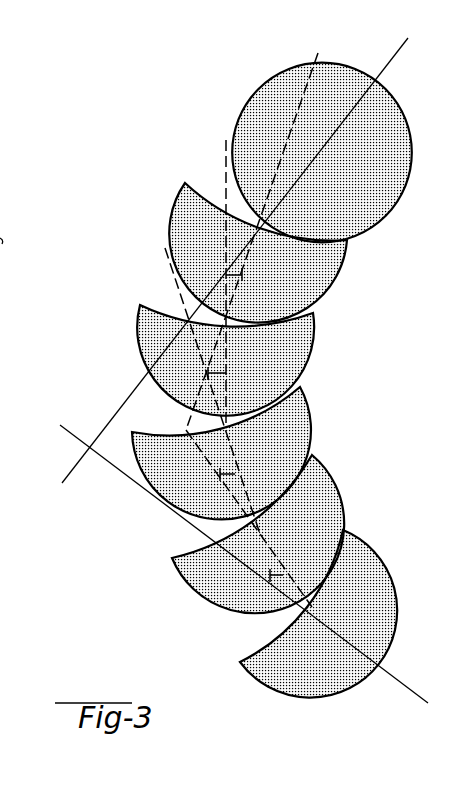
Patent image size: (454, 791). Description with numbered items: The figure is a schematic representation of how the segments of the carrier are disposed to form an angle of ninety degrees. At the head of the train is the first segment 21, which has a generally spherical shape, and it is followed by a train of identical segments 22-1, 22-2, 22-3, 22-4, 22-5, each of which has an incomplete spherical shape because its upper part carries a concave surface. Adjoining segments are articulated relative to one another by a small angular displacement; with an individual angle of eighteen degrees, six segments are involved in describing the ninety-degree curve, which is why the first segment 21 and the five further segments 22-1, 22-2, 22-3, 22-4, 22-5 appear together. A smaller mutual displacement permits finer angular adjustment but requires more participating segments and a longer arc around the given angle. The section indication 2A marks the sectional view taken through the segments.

The first segment 21 is at (388, 92).
The segment 22-1 is at (345, 262).
The segment 22-2 is at (313, 330).
The segment 22-3 is at (300, 392).
The segment 22-4 is at (328, 477).
The segment 22-5 is at (367, 542).
The section line 2A- 2A is at (193, 183).